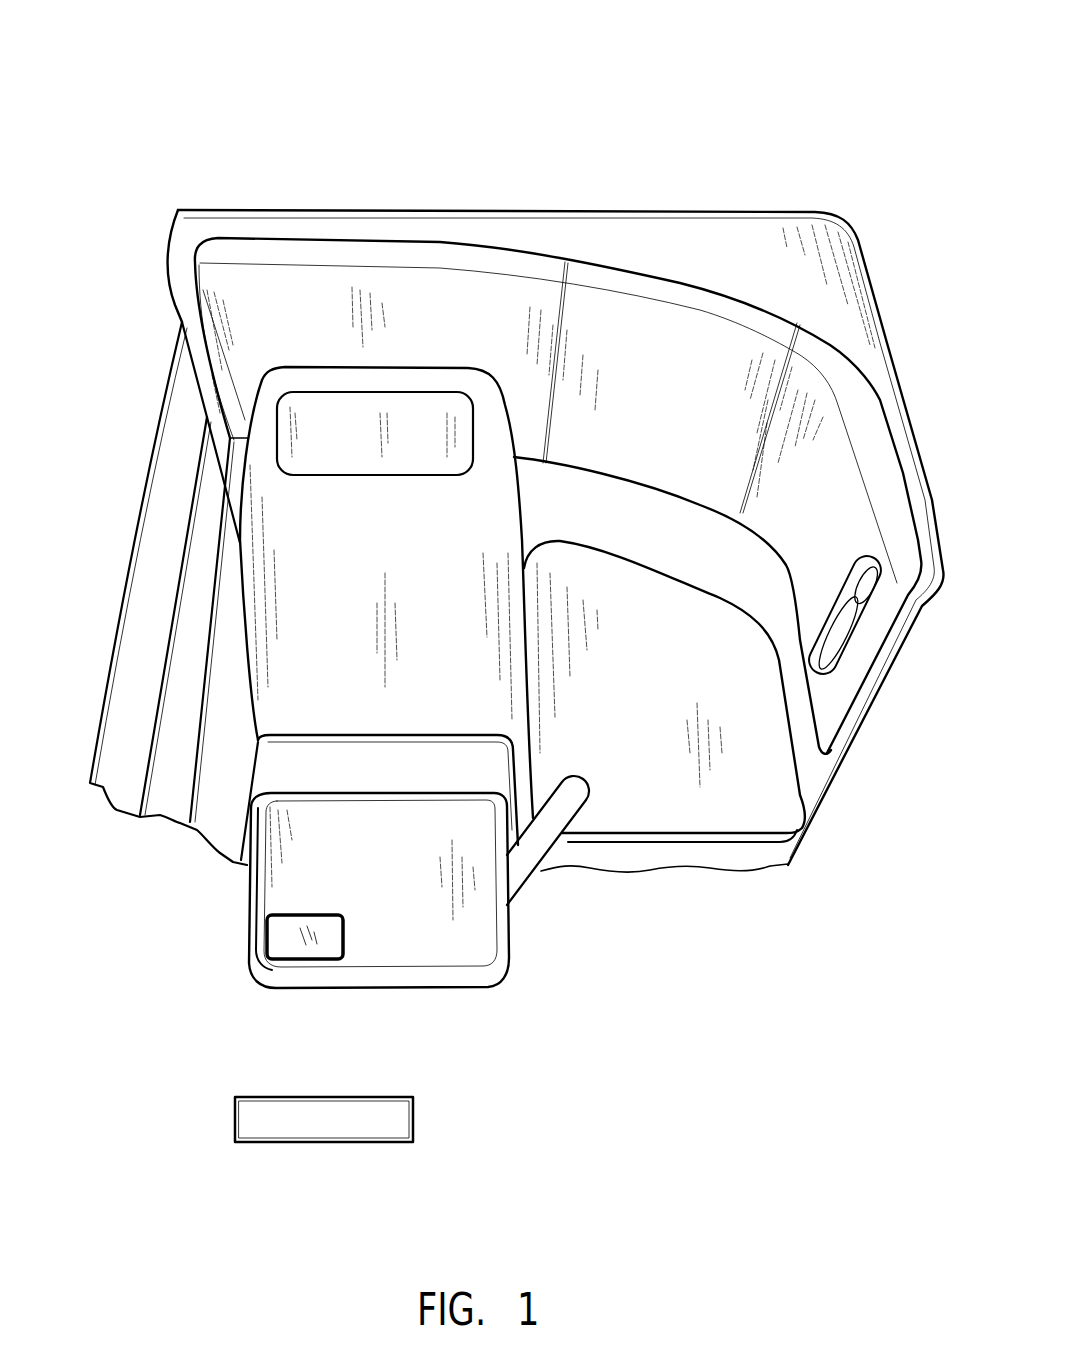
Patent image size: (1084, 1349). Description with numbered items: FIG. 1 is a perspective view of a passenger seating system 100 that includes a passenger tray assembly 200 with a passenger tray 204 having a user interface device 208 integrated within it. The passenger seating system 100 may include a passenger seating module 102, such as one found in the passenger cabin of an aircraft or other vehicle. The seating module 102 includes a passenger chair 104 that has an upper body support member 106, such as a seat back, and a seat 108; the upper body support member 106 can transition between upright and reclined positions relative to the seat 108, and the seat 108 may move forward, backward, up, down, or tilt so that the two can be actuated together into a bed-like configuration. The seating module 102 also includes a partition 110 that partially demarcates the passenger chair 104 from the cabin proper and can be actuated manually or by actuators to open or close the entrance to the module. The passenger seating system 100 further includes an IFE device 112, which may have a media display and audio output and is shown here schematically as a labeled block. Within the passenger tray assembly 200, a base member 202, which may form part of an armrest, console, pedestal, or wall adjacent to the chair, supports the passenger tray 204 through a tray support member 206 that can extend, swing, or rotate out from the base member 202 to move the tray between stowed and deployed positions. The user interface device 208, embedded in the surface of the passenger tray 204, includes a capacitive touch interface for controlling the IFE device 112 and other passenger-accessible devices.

The passenger seating system 100 is at (499, 614).
The passenger seating module 102 is at (648, 275).
The passenger chair 104 is at (420, 365).
The upper body support member 106 is at (310, 503).
The seat 108 is at (275, 773).
The partition 110 is at (168, 542).
The IFE device 112 is at (317, 1142).
The passenger tray assembly 200 is at (439, 615).
The base member 202 is at (682, 803).
The passenger tray 204 is at (413, 950).
The tray support member 206 is at (532, 860).
The user interface device 208 is at (283, 940).